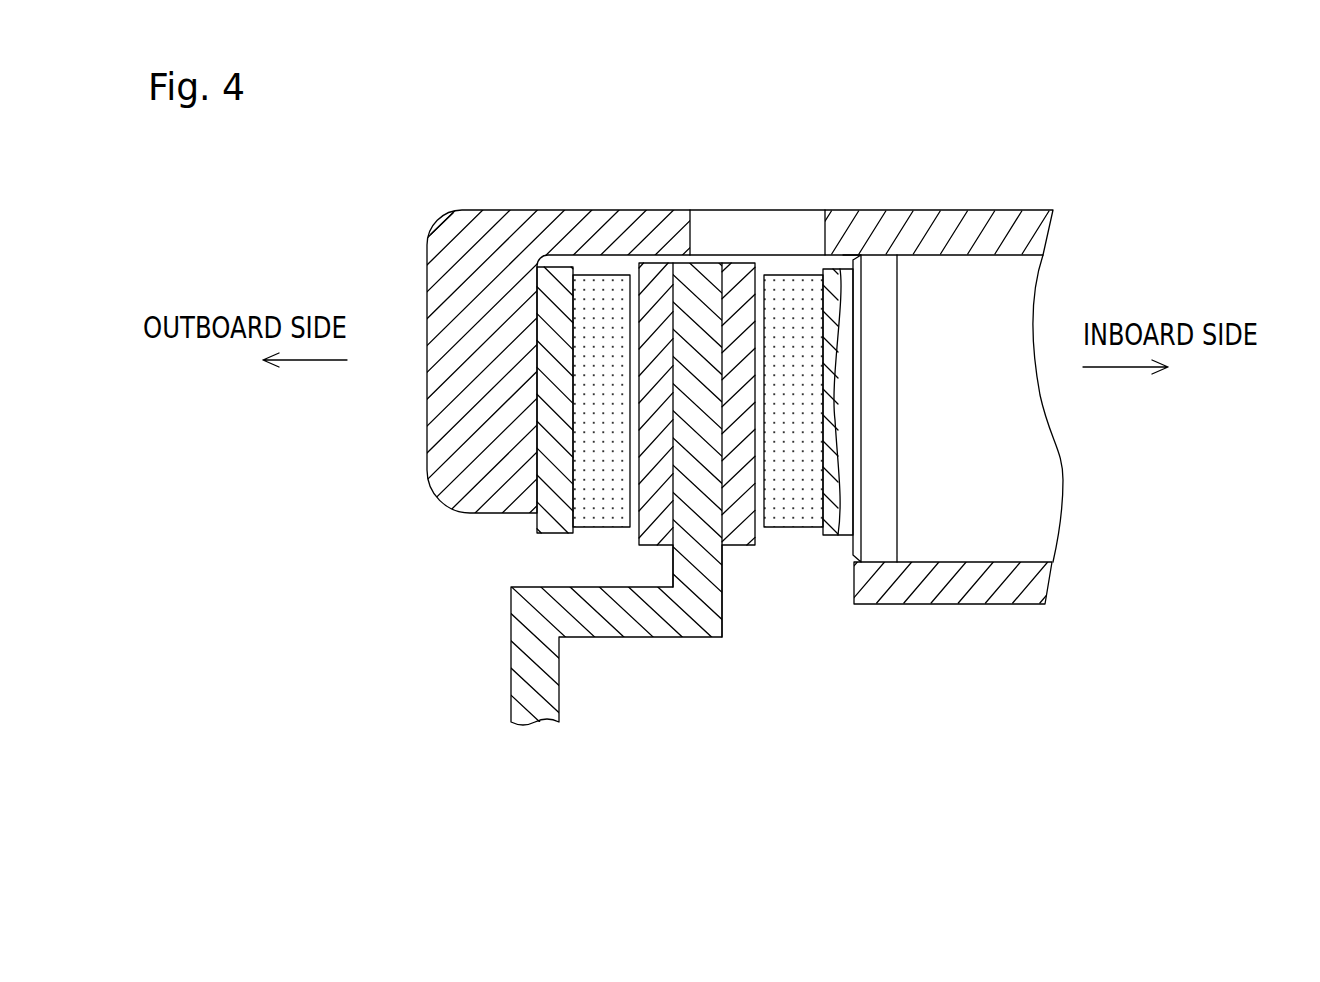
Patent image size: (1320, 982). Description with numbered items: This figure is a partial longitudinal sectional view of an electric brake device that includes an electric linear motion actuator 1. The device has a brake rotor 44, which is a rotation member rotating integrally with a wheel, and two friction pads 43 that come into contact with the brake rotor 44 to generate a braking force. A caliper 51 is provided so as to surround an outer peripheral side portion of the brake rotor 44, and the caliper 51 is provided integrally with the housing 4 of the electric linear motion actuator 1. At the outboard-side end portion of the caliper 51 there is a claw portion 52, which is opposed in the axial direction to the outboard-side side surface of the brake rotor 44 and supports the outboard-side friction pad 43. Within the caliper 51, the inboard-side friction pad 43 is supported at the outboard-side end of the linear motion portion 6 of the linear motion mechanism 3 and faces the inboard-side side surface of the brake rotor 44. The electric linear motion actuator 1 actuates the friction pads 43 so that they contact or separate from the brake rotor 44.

The electric linear motion actuator 1 is at (910, 637).
The linear motion mechanism 3 is at (1032, 488).
The housing 4 is at (1007, 594).
The linear motion portion 6 is at (963, 428).
The friction pad 43 is at (602, 528).
The brake rotor 44 is at (703, 580).
The caliper 51 is at (591, 193).
The claw portion 52 is at (440, 433).